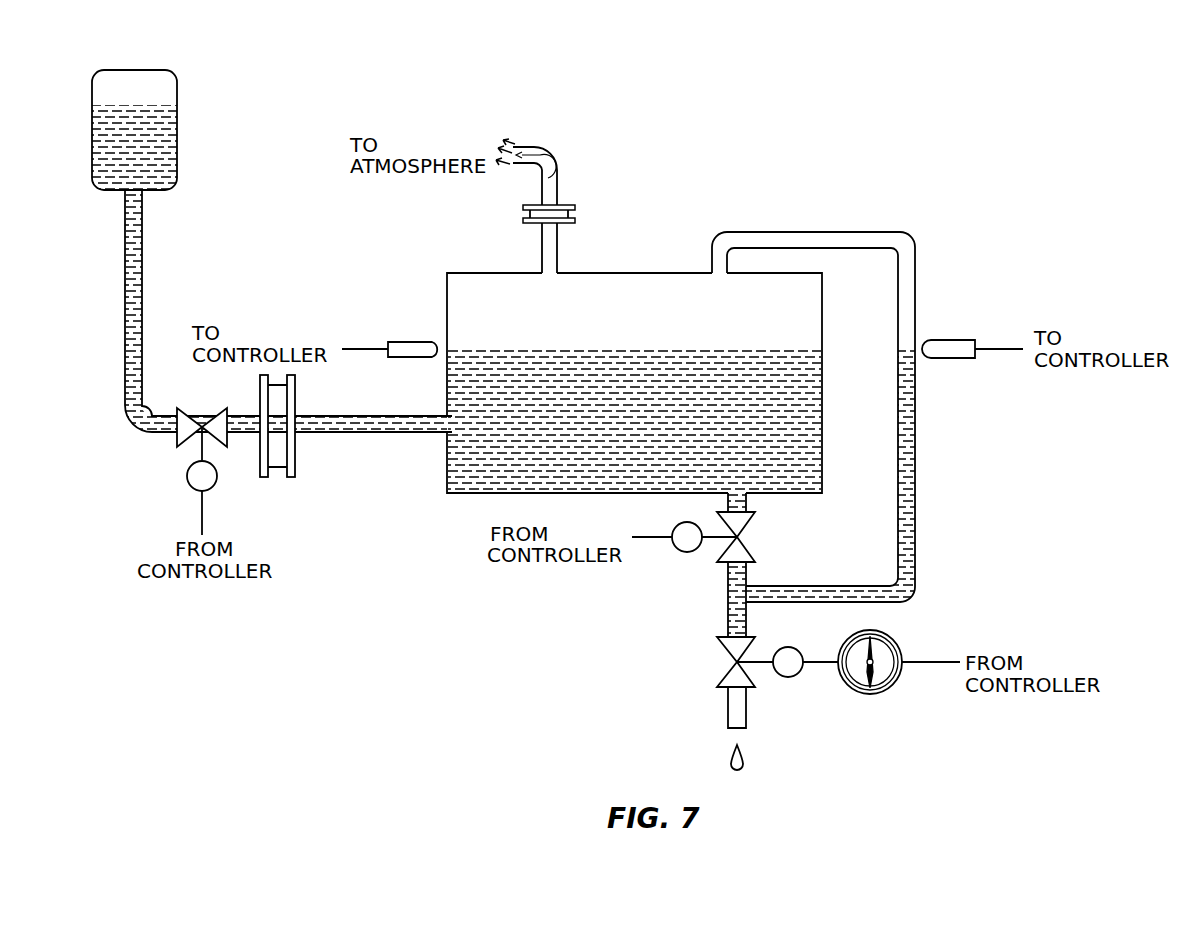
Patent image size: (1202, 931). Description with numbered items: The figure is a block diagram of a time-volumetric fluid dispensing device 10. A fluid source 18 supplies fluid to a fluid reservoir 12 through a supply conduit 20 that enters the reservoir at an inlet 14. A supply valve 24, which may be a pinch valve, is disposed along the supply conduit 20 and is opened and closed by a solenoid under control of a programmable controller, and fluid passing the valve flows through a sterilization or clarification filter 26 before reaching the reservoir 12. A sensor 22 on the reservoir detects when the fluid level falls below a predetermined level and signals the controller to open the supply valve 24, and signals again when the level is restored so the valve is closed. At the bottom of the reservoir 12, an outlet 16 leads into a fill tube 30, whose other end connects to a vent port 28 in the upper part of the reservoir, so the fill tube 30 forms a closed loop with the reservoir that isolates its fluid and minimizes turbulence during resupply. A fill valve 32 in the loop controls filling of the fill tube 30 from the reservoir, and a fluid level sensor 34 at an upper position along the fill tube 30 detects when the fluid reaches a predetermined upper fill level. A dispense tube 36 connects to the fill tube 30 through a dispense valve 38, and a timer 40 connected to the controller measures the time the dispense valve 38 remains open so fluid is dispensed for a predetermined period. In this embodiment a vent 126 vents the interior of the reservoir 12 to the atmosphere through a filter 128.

The fluid dispensing device 10 is at (954, 112).
The fluid reservoir 12 is at (482, 272).
The inlet 14 is at (447, 417).
The outlet 16 is at (748, 486).
The fluid source 18 is at (178, 112).
The supply conduit 20 is at (124, 282).
The sensor 22 is at (418, 341).
The supply valve 24 is at (177, 440).
The filter 26 is at (297, 457).
The vent port 28 is at (712, 272).
The fill tube 30 is at (917, 290).
The fill valve 32 is at (750, 555).
The fluid level sensor 34 is at (940, 339).
The dispense tube 36 is at (748, 712).
The dispense valve 38 is at (725, 672).
The timer 40 is at (893, 640).
The vent 126 is at (546, 148).
The filter 128 is at (572, 212).